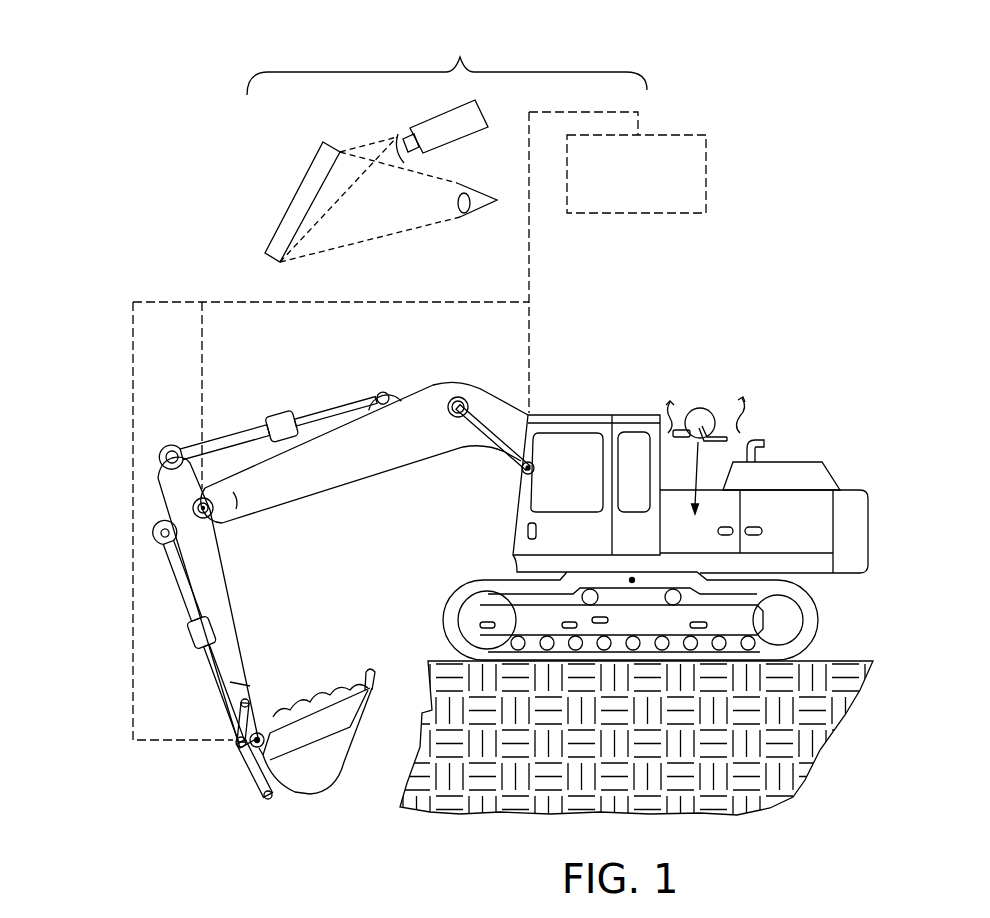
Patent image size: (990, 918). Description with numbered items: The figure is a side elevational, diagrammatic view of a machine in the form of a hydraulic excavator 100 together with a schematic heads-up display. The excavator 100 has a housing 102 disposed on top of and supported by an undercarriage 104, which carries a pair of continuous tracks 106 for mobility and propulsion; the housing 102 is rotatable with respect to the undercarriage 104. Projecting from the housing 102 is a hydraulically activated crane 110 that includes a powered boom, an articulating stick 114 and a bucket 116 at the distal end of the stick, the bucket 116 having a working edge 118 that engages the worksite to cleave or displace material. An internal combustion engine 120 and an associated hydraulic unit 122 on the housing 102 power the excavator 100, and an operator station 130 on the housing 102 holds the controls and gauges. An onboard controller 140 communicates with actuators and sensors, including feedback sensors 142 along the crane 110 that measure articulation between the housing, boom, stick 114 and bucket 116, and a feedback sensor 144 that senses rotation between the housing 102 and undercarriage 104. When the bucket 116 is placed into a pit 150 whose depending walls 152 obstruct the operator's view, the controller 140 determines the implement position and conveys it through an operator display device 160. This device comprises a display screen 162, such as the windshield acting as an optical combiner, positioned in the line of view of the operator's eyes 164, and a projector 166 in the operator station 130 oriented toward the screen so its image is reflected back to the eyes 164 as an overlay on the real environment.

The hydraulic excavator 100 is at (822, 356).
The housing 102 is at (870, 527).
The undercarriage 104 is at (700, 613).
The continuous tracks 106 is at (815, 647).
The crane 110 is at (260, 405).
The articulating stick 114 is at (234, 588).
The bucket 116 is at (348, 774).
The working edge 118 is at (377, 672).
The internal combustion engine 120 is at (813, 461).
The hydraulic unit 122 is at (700, 407).
The operator station 130 is at (613, 413).
The controller 140 is at (617, 197).
The feedback sensors 142 is at (212, 513).
The feedback sensor 144 is at (632, 580).
The pit 150 is at (397, 685).
The depending walls 152 is at (418, 748).
The operator display device 160 is at (434, 156).
The display screen 162 is at (293, 202).
The operator's eyes 164 is at (478, 210).
The projector 166 is at (457, 143).